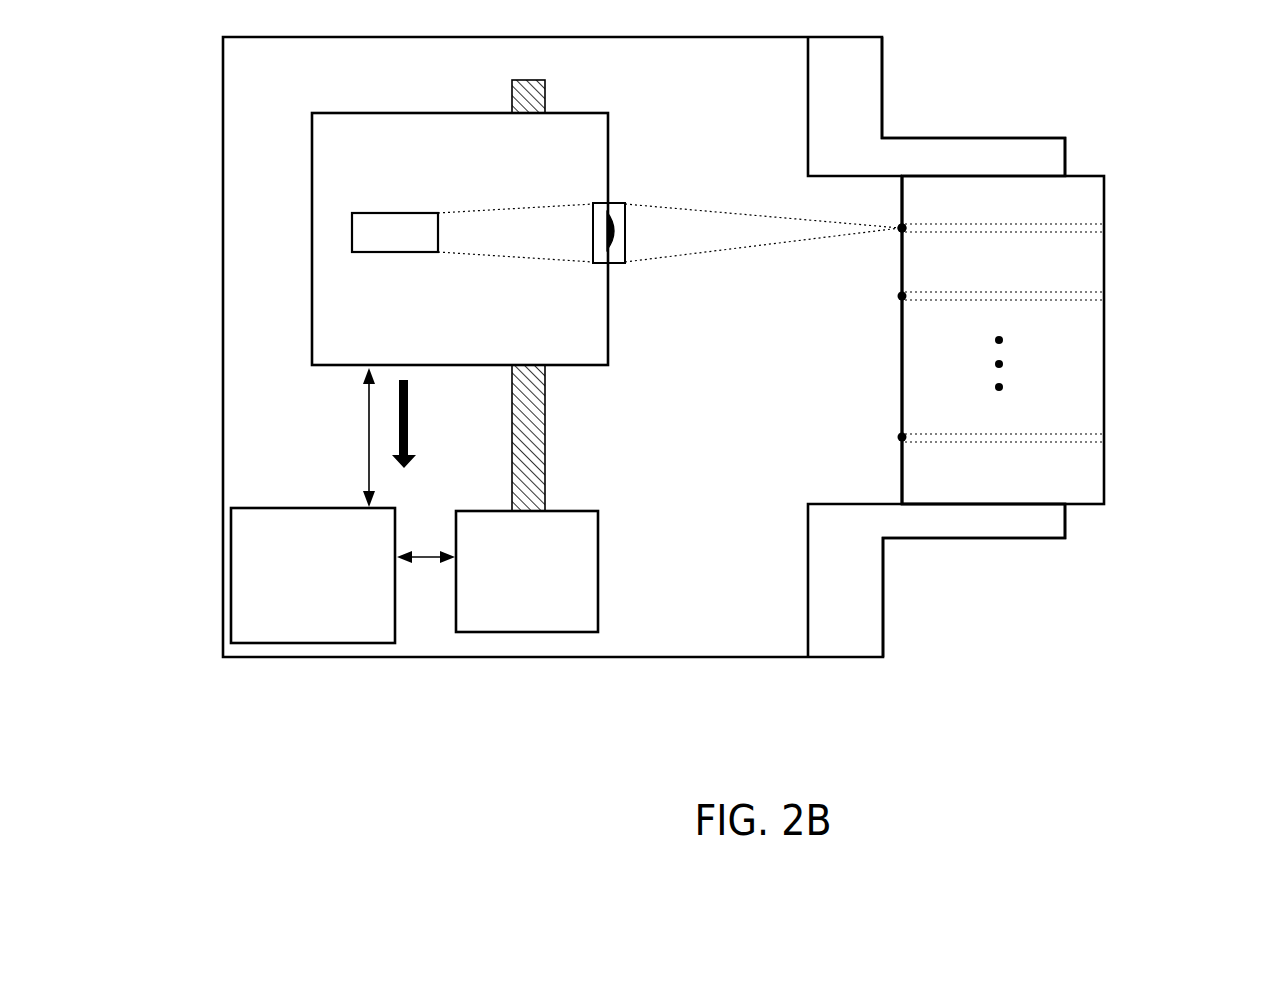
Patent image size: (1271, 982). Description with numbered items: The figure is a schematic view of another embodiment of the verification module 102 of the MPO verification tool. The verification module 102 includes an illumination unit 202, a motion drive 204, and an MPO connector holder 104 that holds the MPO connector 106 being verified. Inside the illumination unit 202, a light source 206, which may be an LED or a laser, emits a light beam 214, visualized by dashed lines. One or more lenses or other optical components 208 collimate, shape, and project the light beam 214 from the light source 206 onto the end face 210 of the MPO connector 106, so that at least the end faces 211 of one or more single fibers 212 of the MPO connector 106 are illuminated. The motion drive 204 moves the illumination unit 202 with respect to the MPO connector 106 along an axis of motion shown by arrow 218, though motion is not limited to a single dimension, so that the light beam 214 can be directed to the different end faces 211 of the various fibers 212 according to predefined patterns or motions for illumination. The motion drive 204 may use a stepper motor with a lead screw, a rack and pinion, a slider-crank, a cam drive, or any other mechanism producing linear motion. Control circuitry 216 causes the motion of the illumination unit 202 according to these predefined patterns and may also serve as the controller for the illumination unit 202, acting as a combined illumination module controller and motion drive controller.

The verification module 102 is at (260, 662).
The MPO connector holder 104 is at (1017, 542).
The MPO connector 106 is at (1095, 175).
The illumination unit 202 is at (308, 232).
The motion drive 204 is at (540, 634).
The light source 206 is at (397, 213).
The lens 208 is at (618, 202).
The end face 210 is at (900, 258).
The fiber end face 211 is at (897, 227).
The single fibers 212 is at (1106, 237).
The light beam 214 is at (548, 256).
The control circuitry 216 is at (340, 507).
The arrow 218 is at (408, 418).